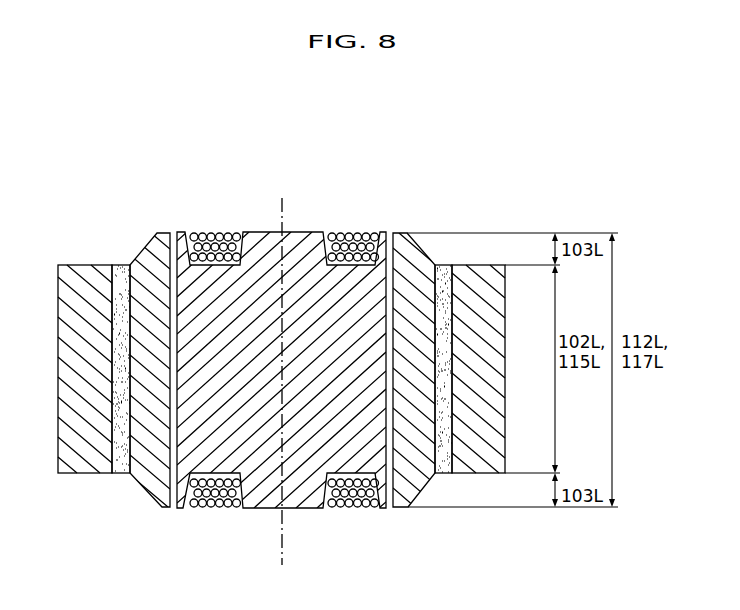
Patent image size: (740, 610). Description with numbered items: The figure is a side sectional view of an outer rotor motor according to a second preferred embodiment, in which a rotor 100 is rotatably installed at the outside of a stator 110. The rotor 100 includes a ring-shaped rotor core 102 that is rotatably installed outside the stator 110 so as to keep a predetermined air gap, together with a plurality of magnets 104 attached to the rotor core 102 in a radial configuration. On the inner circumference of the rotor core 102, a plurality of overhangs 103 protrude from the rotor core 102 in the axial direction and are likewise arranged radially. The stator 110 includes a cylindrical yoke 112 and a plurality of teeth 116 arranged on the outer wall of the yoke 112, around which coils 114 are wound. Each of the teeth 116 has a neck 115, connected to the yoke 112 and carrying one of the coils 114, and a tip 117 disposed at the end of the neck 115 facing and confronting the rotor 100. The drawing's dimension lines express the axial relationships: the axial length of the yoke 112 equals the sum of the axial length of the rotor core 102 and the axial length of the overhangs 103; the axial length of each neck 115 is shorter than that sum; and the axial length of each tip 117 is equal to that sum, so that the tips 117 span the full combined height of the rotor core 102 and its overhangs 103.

The rotor 100 is at (437, 248).
The rotor core 102 is at (85, 277).
The overhangs 103 is at (147, 253).
The magnets 104 is at (120, 278).
The stator 110 is at (238, 207).
The yoke 112 is at (258, 232).
The coils 114 is at (387, 187).
The neck 115 is at (347, 233).
The teeth 116 is at (335, 232).
The tip 117 is at (386, 232).